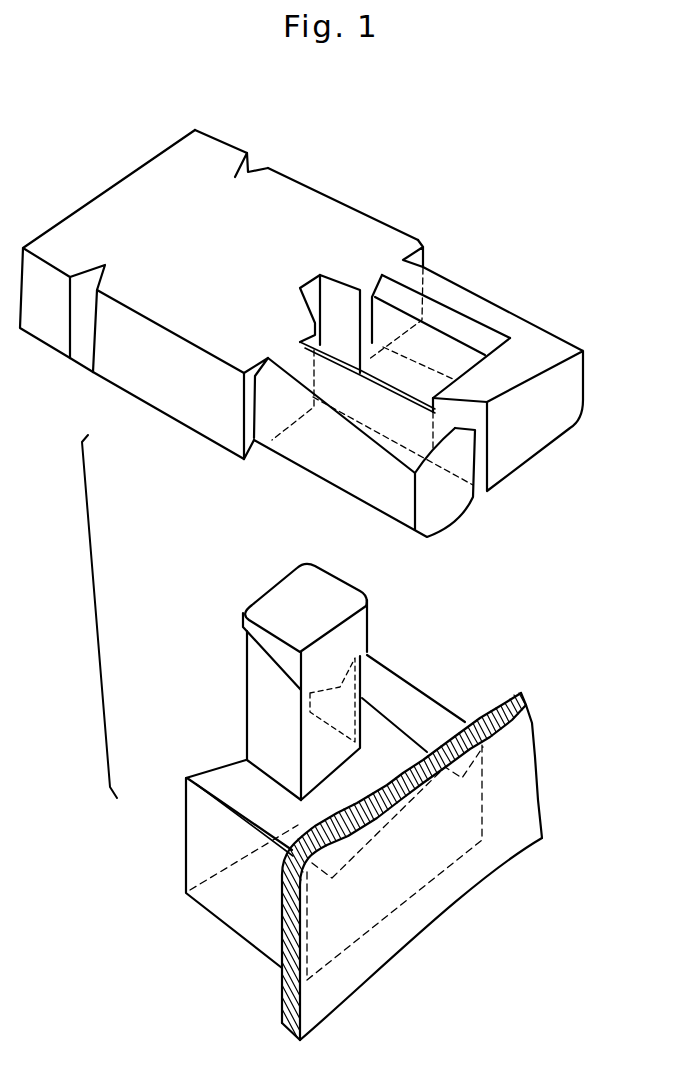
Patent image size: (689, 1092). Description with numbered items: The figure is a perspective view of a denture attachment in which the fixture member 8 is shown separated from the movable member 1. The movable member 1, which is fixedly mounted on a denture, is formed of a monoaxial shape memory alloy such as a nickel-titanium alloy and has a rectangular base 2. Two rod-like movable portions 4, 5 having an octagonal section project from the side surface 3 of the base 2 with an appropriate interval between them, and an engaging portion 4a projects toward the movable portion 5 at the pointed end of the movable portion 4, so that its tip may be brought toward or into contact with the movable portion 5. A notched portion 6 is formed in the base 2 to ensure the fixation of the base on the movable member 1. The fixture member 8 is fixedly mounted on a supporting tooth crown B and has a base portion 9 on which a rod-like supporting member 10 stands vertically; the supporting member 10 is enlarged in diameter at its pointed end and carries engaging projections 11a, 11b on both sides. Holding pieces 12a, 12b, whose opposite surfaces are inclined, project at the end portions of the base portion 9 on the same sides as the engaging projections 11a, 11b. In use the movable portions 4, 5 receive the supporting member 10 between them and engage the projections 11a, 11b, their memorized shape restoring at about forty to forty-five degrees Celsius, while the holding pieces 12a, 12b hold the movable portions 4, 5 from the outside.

The movable member 1 is at (316, 181).
The base 2 is at (368, 222).
The side surface 3 is at (423, 250).
The movable portion 4 is at (480, 303).
The engaging portion 4a is at (493, 363).
The movable portion 5 is at (433, 522).
The notched portion 6 is at (248, 173).
The fixture member 8 is at (204, 912).
The base portion 9 is at (205, 864).
The supporting member 10 is at (258, 706).
The engaging projection 11a is at (372, 634).
The engaging projection 11b is at (246, 655).
The holding piece 12a is at (408, 688).
The holding piece 12b is at (202, 783).
The supporting tooth crown B is at (280, 1003).